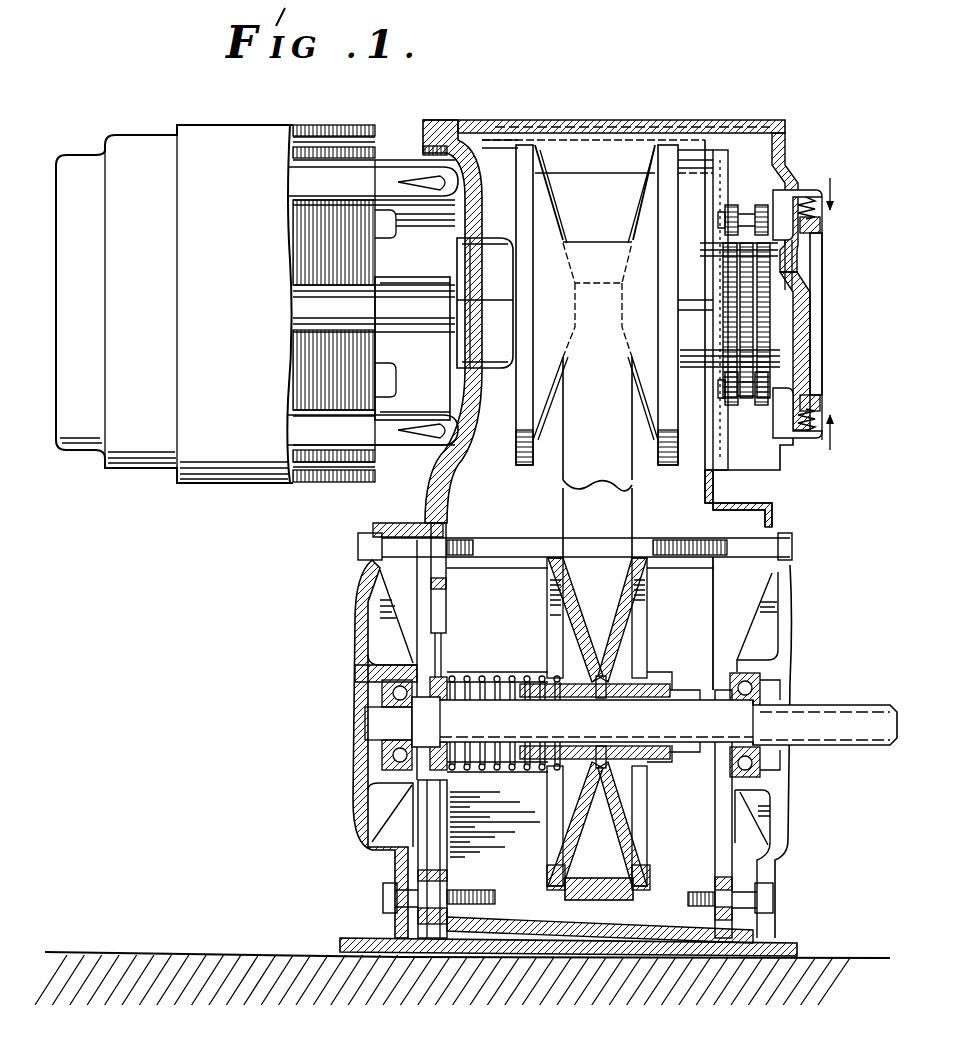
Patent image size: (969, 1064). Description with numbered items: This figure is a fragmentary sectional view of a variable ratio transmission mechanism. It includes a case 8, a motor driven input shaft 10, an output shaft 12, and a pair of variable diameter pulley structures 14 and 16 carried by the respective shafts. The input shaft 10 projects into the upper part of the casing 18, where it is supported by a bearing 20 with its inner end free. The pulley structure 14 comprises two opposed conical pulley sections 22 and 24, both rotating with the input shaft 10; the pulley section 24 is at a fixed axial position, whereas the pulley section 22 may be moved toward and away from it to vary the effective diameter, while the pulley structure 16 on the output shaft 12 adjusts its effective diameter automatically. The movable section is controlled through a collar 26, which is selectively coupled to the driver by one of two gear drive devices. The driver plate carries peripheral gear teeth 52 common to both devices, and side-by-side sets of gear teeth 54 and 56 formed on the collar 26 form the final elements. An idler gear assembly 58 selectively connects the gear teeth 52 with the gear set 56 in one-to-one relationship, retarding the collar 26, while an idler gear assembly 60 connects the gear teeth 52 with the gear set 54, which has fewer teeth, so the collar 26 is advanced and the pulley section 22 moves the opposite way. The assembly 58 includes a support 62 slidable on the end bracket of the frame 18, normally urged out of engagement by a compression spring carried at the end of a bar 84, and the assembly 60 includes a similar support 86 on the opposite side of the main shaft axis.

The case 8 is at (625, 119).
The input shaft 10 is at (300, 300).
The output shaft 12 is at (855, 706).
The variable diameter pulley structure 14 is at (576, 203).
The variable diameter pulley structure 16 is at (655, 632).
The casing 18 is at (535, 105).
The bearing 20 is at (465, 340).
The conical pulley section 22 is at (678, 305).
The conical pulley section 24 is at (549, 258).
The collar 26 is at (710, 340).
The peripheral gear teeth 52 is at (762, 318).
The gear teeth set 54 is at (746, 282).
The gear teeth set 56 is at (738, 242).
The idler gear assembly 58 is at (746, 212).
The idler gear assembly 60 is at (750, 412).
The support 62 is at (800, 188).
The bar 84 is at (823, 244).
The support 86 is at (820, 445).